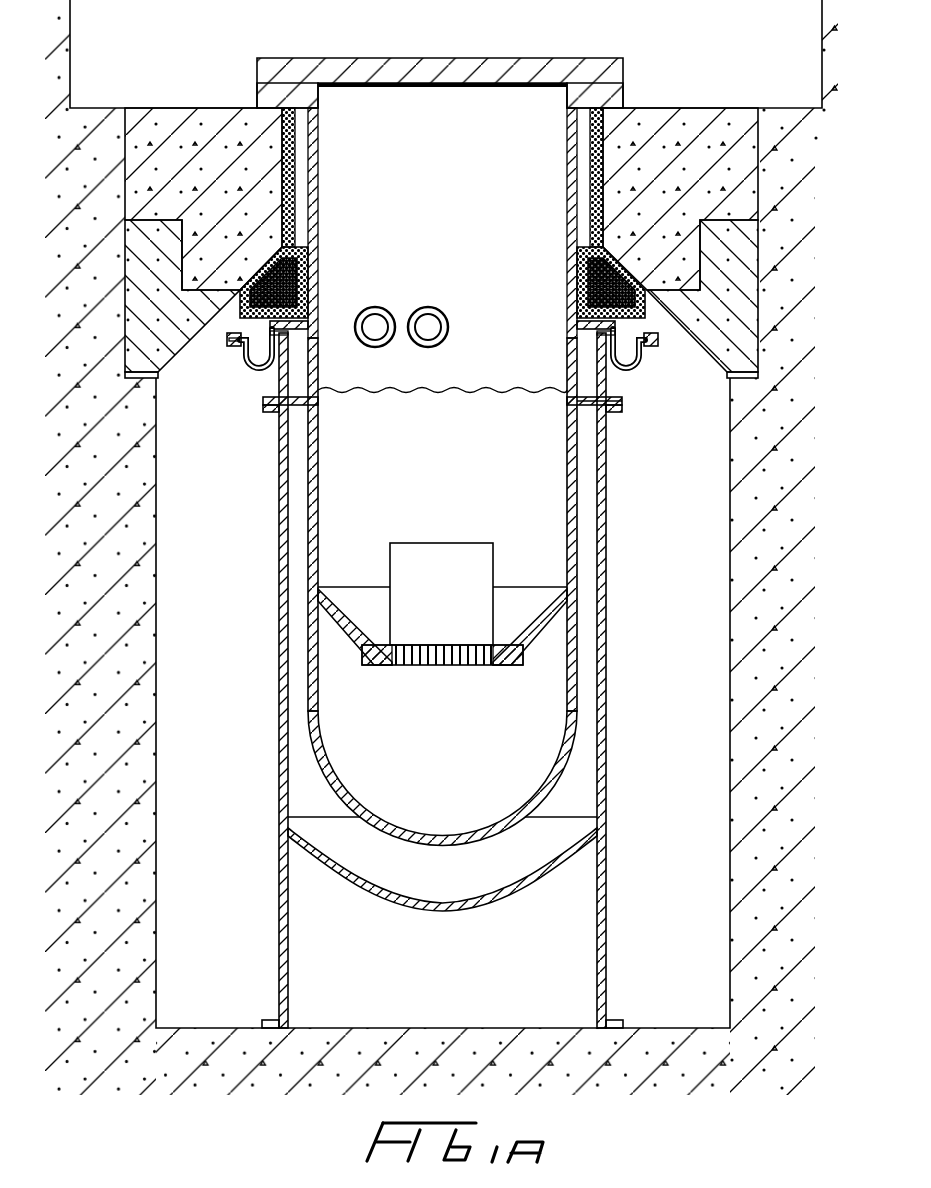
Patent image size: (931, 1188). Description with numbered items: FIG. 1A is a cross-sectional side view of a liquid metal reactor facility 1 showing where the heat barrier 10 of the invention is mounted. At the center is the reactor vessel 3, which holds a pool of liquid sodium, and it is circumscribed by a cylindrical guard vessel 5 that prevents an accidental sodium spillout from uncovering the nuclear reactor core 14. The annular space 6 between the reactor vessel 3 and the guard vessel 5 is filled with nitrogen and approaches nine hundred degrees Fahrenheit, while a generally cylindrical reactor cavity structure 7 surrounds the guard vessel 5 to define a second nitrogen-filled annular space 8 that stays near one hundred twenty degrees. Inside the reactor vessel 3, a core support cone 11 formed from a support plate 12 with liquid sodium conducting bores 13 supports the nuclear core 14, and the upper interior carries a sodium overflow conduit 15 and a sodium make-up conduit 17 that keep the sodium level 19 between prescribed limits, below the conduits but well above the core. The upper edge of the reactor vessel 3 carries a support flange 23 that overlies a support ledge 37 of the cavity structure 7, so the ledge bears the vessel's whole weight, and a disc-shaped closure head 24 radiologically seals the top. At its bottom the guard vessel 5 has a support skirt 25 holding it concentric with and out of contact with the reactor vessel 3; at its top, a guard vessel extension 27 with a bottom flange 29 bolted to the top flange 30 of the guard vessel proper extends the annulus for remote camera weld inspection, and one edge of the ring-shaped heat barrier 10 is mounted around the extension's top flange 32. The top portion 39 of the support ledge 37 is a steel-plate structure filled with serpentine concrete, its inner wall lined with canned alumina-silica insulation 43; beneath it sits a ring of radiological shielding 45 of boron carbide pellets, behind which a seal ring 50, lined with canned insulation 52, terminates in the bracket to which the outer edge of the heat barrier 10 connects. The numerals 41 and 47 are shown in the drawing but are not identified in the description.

The liquid metal reactor facility 1 is at (246, 85).
The reactor vessel 3 is at (578, 562).
The guard vessel 5 is at (605, 533).
The annular space 6 is at (300, 580).
The reactor cavity structure 7 is at (728, 682).
The annular space 8 is at (682, 792).
The heat barrier 10 is at (236, 365).
The core support cone 11 is at (575, 614).
The support plate 12 is at (388, 660).
The liquid sodium conducting bores 13 is at (478, 660).
The nuclear reactor core 14 is at (456, 607).
The sodium overflow conduit 15 is at (376, 318).
The sodium make-up conduit 17 is at (430, 318).
The sodium level 19 is at (523, 388).
The support flange 23 is at (612, 100).
The closure head 24 is at (385, 58).
The support skirt 25 is at (282, 945).
The guard vessel extension 27 is at (278, 370).
The bottom flange 29 is at (624, 403).
The top flange 30 is at (620, 414).
The top flange 32 is at (298, 330).
The support ledge 37 is at (221, 184).
The top portion 39 is at (140, 168).
The foundation block 41 is at (132, 292).
The canned alumina-silica insulation 43 is at (289, 200).
The ring of radiological shielding 45 is at (300, 285).
The sealant jacket 47 is at (300, 258).
The seal ring 50 is at (238, 308).
The canned insulation 52 is at (237, 331).